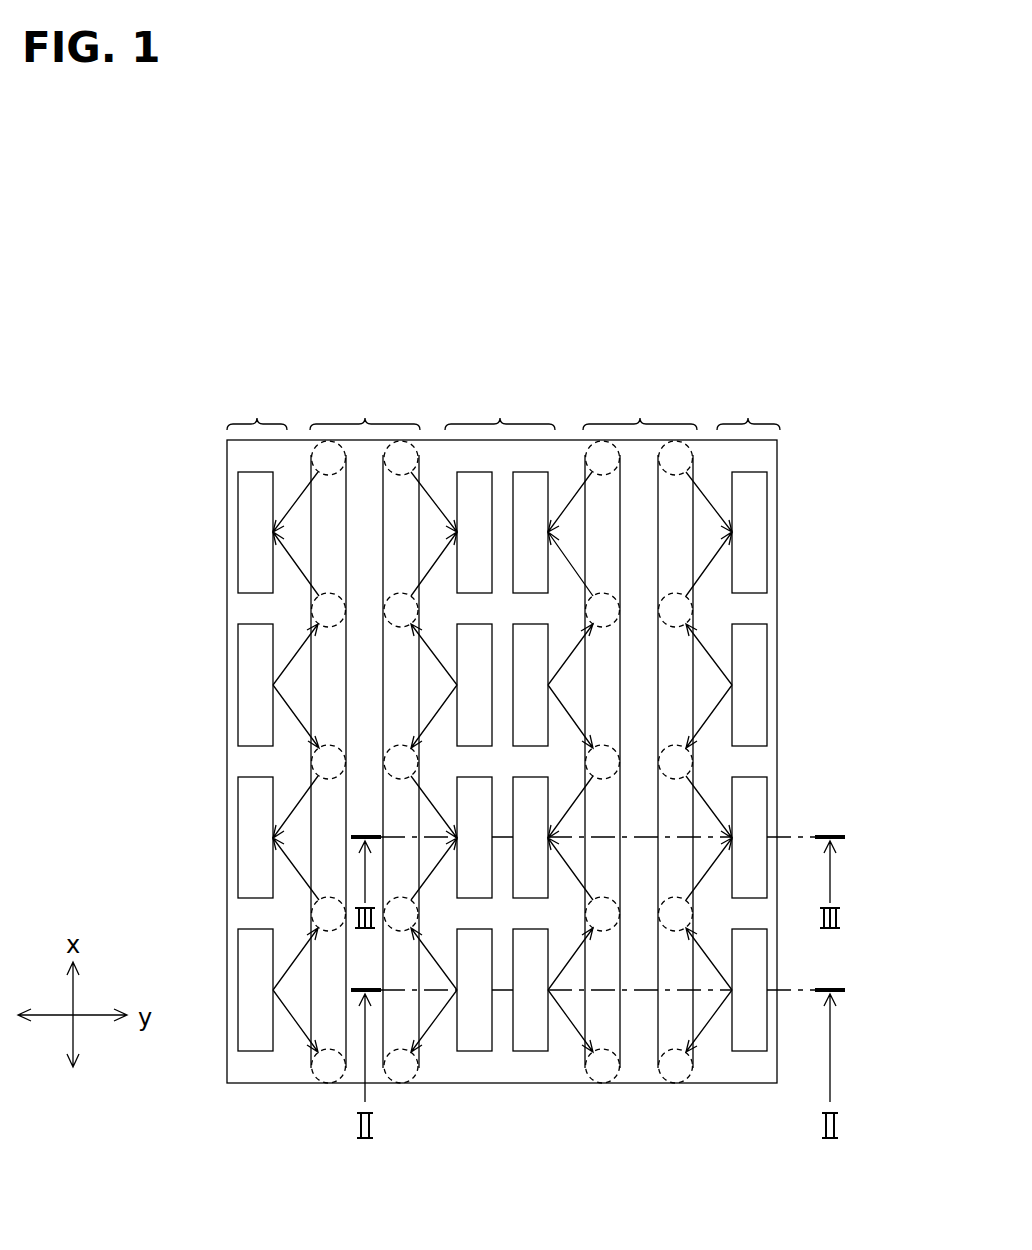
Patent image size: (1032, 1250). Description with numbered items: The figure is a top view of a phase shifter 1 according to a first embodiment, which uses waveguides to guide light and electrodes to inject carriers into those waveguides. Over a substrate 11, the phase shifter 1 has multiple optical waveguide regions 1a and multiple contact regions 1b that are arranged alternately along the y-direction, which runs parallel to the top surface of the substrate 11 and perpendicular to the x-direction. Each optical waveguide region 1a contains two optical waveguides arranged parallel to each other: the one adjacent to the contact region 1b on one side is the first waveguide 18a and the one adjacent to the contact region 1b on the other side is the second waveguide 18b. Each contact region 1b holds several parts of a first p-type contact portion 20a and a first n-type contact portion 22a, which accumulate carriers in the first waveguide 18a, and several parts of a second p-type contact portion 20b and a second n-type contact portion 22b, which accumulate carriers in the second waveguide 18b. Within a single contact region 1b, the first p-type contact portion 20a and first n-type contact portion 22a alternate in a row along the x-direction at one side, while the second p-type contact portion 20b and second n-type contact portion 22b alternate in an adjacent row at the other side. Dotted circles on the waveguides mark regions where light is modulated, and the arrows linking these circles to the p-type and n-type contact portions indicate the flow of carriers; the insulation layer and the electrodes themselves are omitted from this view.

The phase shifter 1 is at (304, 355).
The substrate 11 is at (215, 483).
The optical waveguide region 1a is at (503, 408).
The contact region 1b is at (503, 408).
The first waveguide 18a is at (410, 1015).
The second waveguide 18b is at (322, 1012).
The first p-type contact portion 20a is at (468, 723).
The second p-type contact portion 20b is at (252, 657).
The first n-type contact portion 22a is at (468, 492).
The second n-type contact portion 22b is at (252, 565).